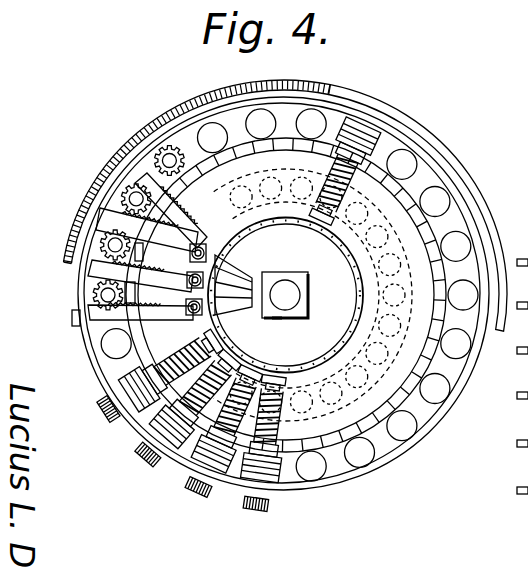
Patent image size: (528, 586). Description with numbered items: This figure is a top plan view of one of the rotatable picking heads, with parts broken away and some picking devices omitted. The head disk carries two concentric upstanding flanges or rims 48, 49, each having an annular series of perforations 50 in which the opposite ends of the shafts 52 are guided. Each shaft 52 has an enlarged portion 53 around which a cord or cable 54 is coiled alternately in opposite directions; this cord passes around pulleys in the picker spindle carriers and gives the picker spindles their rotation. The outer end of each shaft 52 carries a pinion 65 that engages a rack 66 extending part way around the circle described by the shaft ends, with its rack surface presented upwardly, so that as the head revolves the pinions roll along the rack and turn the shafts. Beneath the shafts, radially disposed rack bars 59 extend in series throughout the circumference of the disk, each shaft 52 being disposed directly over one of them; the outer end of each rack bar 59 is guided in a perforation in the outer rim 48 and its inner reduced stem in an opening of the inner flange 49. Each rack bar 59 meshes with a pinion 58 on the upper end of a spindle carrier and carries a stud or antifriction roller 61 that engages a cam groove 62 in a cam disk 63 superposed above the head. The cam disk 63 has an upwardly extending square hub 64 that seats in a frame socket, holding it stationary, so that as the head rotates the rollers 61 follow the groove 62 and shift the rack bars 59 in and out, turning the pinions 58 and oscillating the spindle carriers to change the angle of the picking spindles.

The upstanding flange or rim 48 is at (355, 480).
The inner annular flange 49 is at (304, 223).
The perforations 50 is at (334, 228).
The shaft 52 is at (331, 177).
The enlarged portion 53 is at (372, 132).
The cord or cable 54 is at (380, 142).
The pinion 58 is at (175, 176).
The rack bar 59 is at (120, 213).
The stud or antifriction roller 61 is at (377, 308).
The cam groove 62 is at (364, 288).
The cam disk 63 is at (375, 252).
The hub 64 is at (276, 316).
The pinion 65 is at (134, 452).
The rack 66 is at (109, 160).